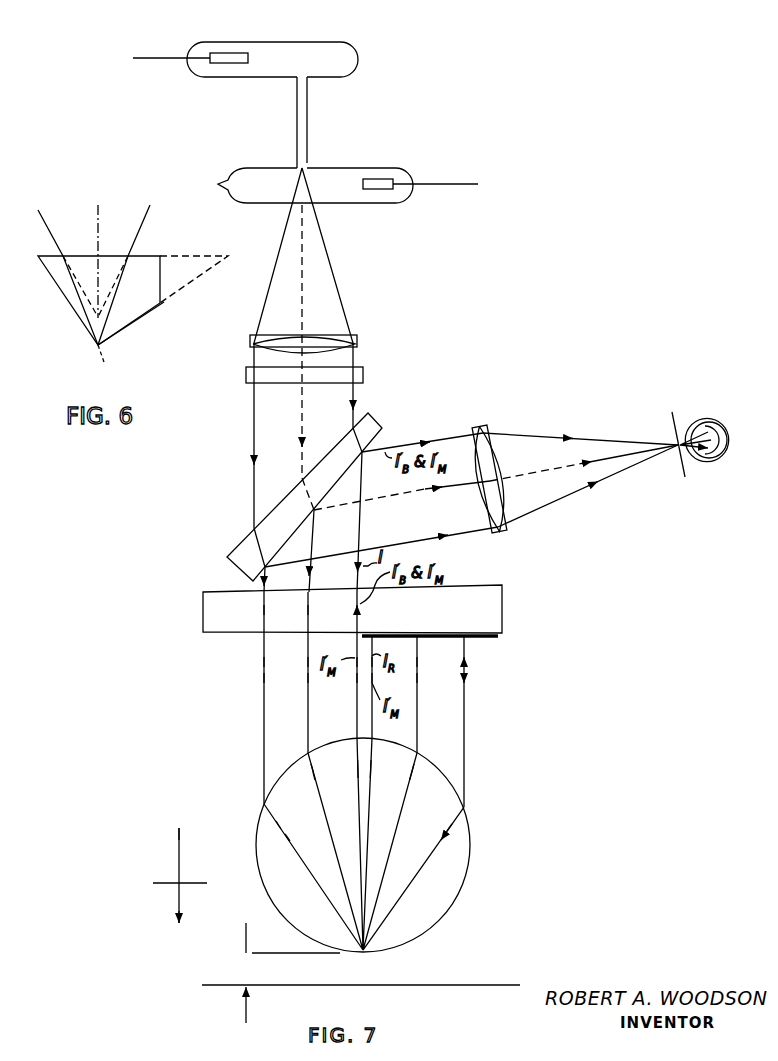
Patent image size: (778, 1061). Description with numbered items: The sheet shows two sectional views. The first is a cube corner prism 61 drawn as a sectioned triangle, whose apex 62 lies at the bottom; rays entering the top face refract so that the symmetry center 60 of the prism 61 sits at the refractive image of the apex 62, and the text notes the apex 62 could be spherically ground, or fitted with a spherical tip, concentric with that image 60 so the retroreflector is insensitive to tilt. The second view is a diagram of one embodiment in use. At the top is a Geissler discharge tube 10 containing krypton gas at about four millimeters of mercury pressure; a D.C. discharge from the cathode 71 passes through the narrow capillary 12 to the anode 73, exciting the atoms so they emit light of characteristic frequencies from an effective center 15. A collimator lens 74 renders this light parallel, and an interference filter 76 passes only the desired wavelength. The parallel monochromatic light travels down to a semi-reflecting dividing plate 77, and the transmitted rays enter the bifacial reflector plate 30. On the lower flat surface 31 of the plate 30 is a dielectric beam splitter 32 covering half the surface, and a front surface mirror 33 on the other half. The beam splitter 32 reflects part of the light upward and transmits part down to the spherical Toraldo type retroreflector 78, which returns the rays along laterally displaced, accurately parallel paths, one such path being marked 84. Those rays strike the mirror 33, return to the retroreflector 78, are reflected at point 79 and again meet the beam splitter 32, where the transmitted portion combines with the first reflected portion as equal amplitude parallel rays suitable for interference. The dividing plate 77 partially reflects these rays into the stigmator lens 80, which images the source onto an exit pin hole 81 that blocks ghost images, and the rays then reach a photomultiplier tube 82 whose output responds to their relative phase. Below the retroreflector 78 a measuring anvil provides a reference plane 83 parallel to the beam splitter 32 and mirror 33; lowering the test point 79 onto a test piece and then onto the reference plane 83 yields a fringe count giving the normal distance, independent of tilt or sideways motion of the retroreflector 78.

In FIG. 7, the lamp envelope 10 is at (358, 53).
In FIG. 7, the cathode 71 is at (238, 62).
In FIG. 7, the capillary stem 12 is at (307, 98).
In FIG. 7, the point light source 15 is at (302, 163).
In FIG. 7, the anode 73 is at (378, 180).
In FIG. 7, the collimator lens 74 is at (357, 340).
In FIG. 7, the interference filter 76 is at (363, 373).
In FIG. 7, the semi-reflecting dividing plate 77 is at (380, 437).
In FIG. 7, the stigmator lens 80 is at (498, 530).
In FIG. 7, the exit pin hole 81 is at (673, 456).
In FIG. 7, the photomultiplier tube 82 is at (725, 390).
In FIG. 7, the bifacial reflector plate 30 is at (488, 597).
In FIG. 7, the lower flat surface 31 is at (487, 632).
In FIG. 7, the beam splitter 32 is at (243, 634).
In FIG. 7, the front surface mirror 33 is at (473, 638).
In FIG. 7, the retroreflector 78 is at (468, 827).
In FIG. 7, the test point 79 is at (364, 953).
In FIG. 7, the optical axis ray 84 is at (366, 843).
In FIG. 7, the reference plane 83 is at (212, 985).
In FIG. 6, the symmetry center 60 is at (104, 328).
In FIG. 6, the cube corner prism 61 is at (158, 306).
In FIG. 6, the apex 62 is at (97, 350).